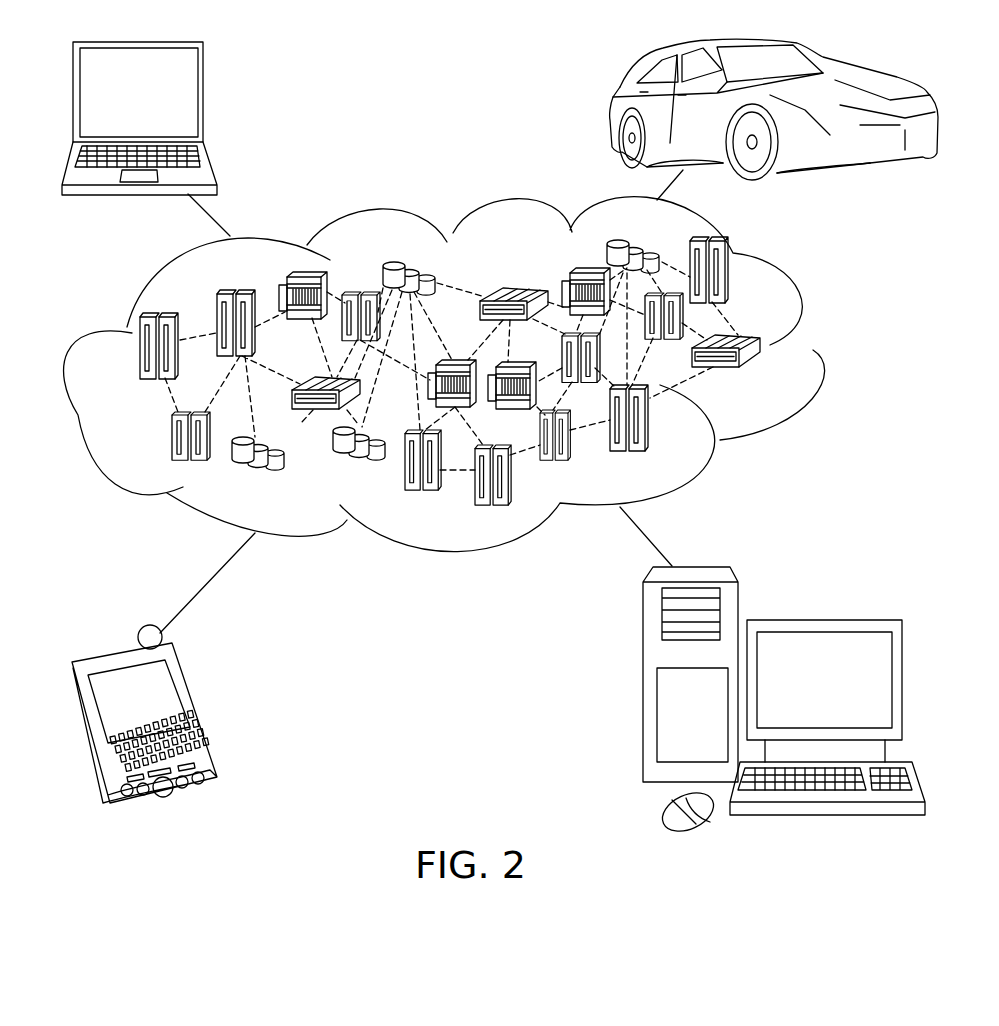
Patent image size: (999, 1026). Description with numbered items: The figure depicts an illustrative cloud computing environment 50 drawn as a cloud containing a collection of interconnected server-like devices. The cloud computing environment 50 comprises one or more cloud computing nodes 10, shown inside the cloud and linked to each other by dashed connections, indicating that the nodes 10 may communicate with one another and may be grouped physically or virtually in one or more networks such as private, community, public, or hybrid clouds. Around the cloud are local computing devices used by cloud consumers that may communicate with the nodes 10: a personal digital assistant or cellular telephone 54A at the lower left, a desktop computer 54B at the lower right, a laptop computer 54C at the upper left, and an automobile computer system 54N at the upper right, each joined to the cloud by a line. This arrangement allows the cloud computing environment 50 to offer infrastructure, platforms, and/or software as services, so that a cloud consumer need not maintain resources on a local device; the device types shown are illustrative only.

The cloud computing node 10 is at (768, 379).
The cloud computing environment 50 is at (813, 350).
The personal digital assistant or cellular telephone 54A is at (197, 714).
The desktop computer 54B is at (822, 619).
The laptop computer 54C is at (205, 97).
The automobile computer system 54N is at (612, 110).